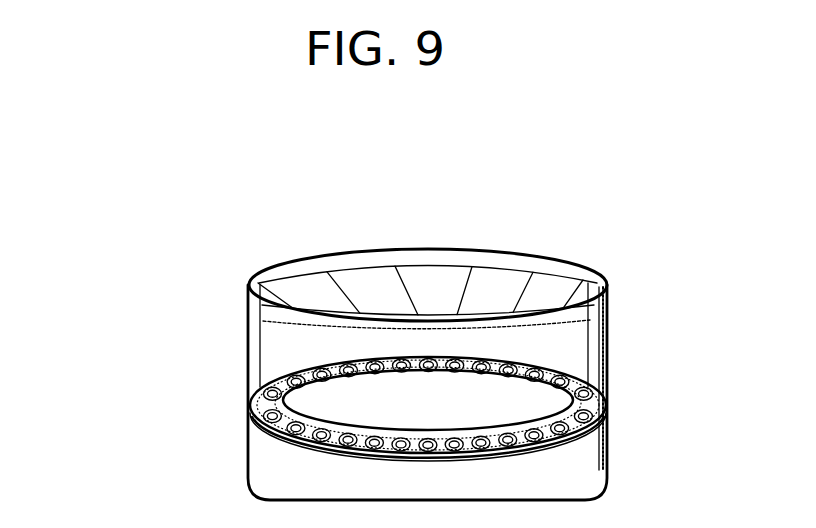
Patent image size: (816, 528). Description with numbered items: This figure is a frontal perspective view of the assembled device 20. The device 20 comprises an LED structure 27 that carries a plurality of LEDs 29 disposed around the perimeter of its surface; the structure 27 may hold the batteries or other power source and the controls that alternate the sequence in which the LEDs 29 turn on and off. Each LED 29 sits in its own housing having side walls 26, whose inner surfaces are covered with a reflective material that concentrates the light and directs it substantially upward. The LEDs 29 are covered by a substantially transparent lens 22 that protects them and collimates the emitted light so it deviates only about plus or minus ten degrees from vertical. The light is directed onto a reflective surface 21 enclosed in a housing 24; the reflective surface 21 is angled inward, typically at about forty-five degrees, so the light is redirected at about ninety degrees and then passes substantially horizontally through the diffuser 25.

The device 20 is at (162, 218).
The reflective surface 21 is at (503, 282).
The transparent lens 22 is at (427, 350).
The housing 24 is at (588, 357).
The diffuser 25 is at (447, 250).
The side walls 26 is at (260, 385).
The LED structure 27 is at (262, 475).
The LEDs 29 is at (340, 372).